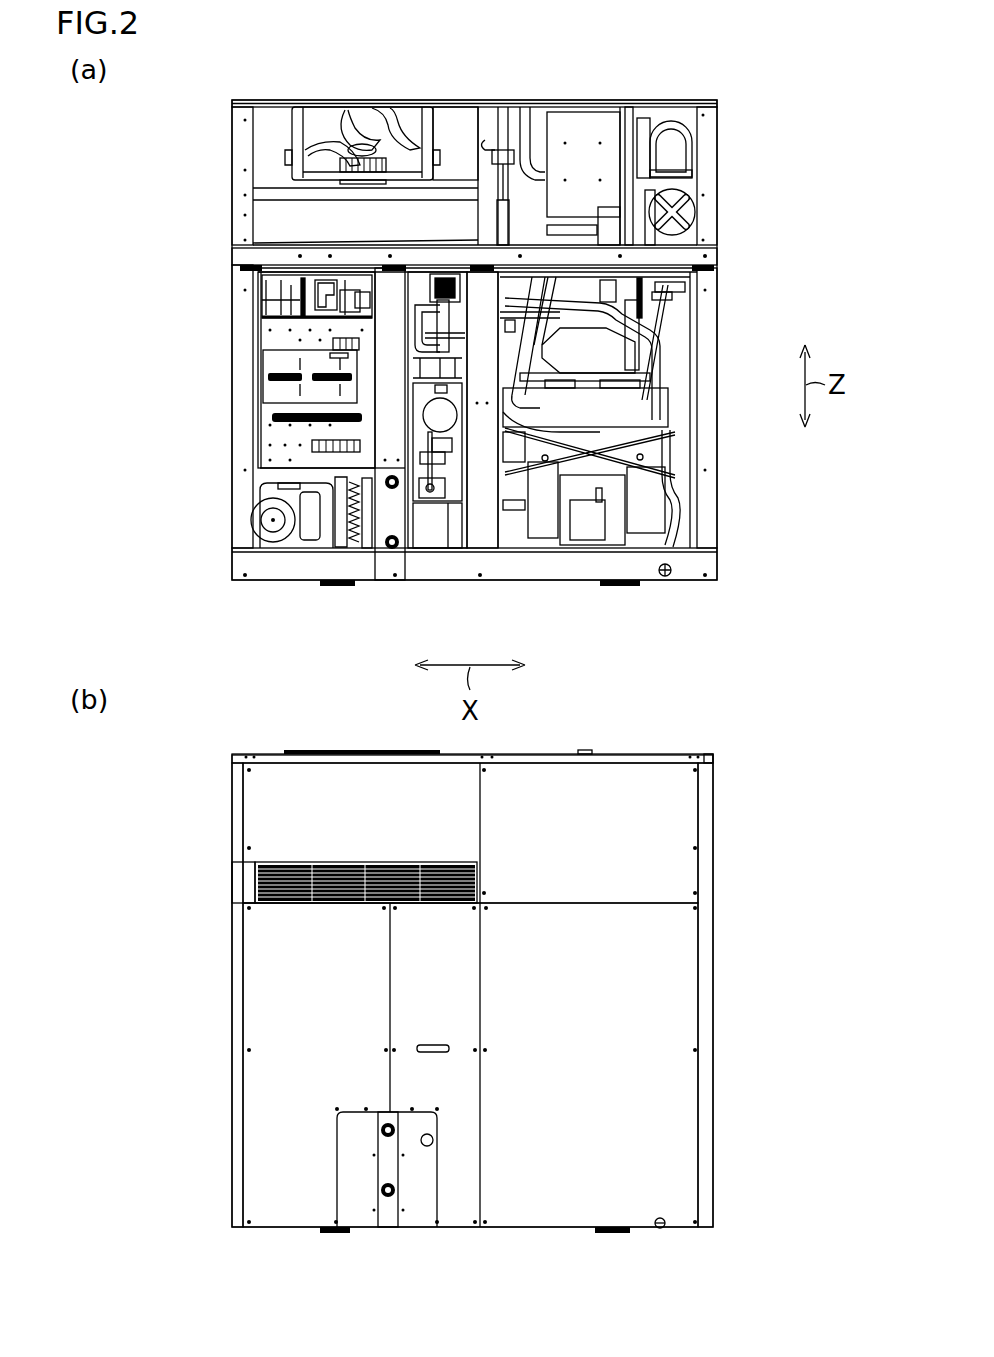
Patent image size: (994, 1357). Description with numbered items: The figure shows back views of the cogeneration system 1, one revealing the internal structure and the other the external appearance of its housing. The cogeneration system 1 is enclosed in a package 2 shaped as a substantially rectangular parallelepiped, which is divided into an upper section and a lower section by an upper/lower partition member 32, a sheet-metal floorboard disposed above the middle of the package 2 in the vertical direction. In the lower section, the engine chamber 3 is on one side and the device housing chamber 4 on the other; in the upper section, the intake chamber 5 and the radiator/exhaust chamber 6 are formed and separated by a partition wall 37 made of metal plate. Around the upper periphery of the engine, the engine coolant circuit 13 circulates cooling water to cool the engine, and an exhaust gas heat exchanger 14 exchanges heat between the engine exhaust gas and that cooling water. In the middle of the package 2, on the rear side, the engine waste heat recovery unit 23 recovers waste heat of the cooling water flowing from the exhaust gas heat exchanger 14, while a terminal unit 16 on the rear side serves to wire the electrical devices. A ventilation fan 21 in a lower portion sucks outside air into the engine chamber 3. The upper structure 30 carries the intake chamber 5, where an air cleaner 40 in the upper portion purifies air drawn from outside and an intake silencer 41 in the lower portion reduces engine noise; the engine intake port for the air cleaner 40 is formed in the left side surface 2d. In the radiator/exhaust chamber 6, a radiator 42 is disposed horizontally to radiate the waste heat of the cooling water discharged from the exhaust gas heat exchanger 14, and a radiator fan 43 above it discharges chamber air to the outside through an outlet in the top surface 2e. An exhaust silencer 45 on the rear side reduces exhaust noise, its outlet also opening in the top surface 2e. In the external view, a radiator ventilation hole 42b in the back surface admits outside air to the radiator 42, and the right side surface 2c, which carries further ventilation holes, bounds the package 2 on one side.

The cogeneration system 1 is at (704, 77).
The package 2 is at (705, 176).
The right side surface 2c is at (240, 994).
The left side surface 2d is at (713, 1016).
The top surface 2e is at (612, 754).
The engine chamber 3 is at (690, 460).
The device housing chamber 4 is at (262, 383).
The intake chamber 5 is at (630, 128).
The radiator/exhaust chamber 6 is at (455, 133).
The engine coolant circuit 13 is at (690, 323).
The exhaust gas heat exchanger 14 is at (690, 423).
The terminal unit 16 is at (262, 353).
The ventilation fan 21 is at (265, 520).
The engine waste heat recovery unit 23 is at (392, 563).
The upper structure 30 is at (232, 167).
The upper/lower partition member 32 is at (700, 256).
The partition wall 37 is at (618, 118).
The air cleaner 40 is at (698, 120).
The intake silencer 41 is at (690, 219).
The radiator 42 is at (272, 193).
The radiator ventilation hole 42b is at (256, 873).
The radiator fan 43 is at (325, 116).
The exhaust silencer 45 is at (560, 116).